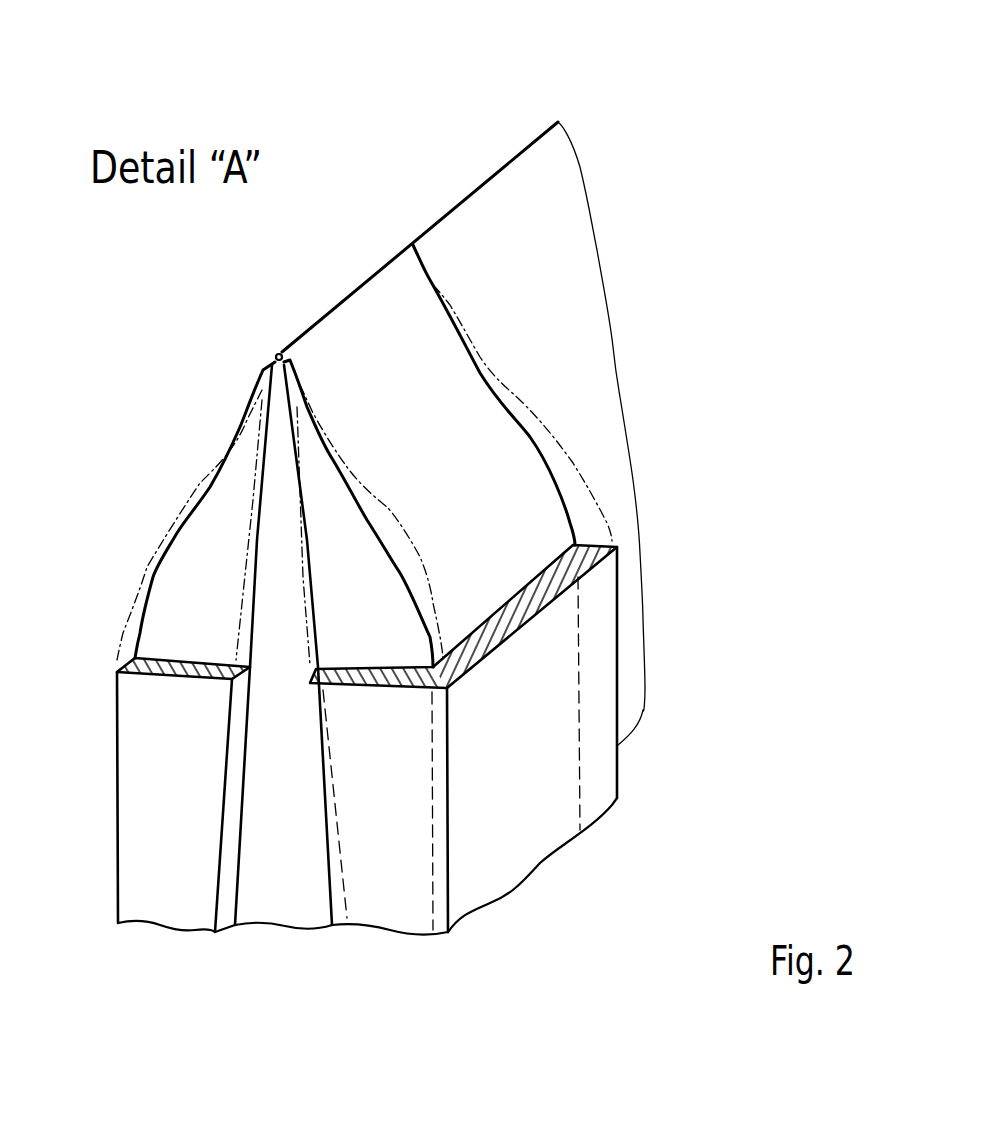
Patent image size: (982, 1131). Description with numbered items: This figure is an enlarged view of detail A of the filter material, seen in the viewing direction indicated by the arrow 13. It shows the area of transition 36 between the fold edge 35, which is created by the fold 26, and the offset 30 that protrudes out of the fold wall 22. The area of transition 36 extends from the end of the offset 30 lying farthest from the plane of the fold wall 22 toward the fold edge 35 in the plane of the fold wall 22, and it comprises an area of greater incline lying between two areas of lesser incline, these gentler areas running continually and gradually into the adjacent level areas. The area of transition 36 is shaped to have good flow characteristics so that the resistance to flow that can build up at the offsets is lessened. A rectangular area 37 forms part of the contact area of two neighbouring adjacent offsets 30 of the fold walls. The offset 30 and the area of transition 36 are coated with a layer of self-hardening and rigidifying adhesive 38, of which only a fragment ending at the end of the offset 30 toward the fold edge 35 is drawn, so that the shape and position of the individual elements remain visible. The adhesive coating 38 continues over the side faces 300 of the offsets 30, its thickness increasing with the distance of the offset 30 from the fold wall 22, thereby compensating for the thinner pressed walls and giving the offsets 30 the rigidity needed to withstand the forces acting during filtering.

The viewing direction arrow 13 is at (543, 100).
The fold wall 22 is at (603, 353).
The fold 26 is at (268, 365).
The offset 30 is at (550, 710).
The fold edge 35 is at (443, 213).
The area of transition 36 is at (333, 455).
The rectangular area 37 is at (527, 860).
The adhesive coating 38 is at (550, 607).
The side faces 300 is at (343, 578).